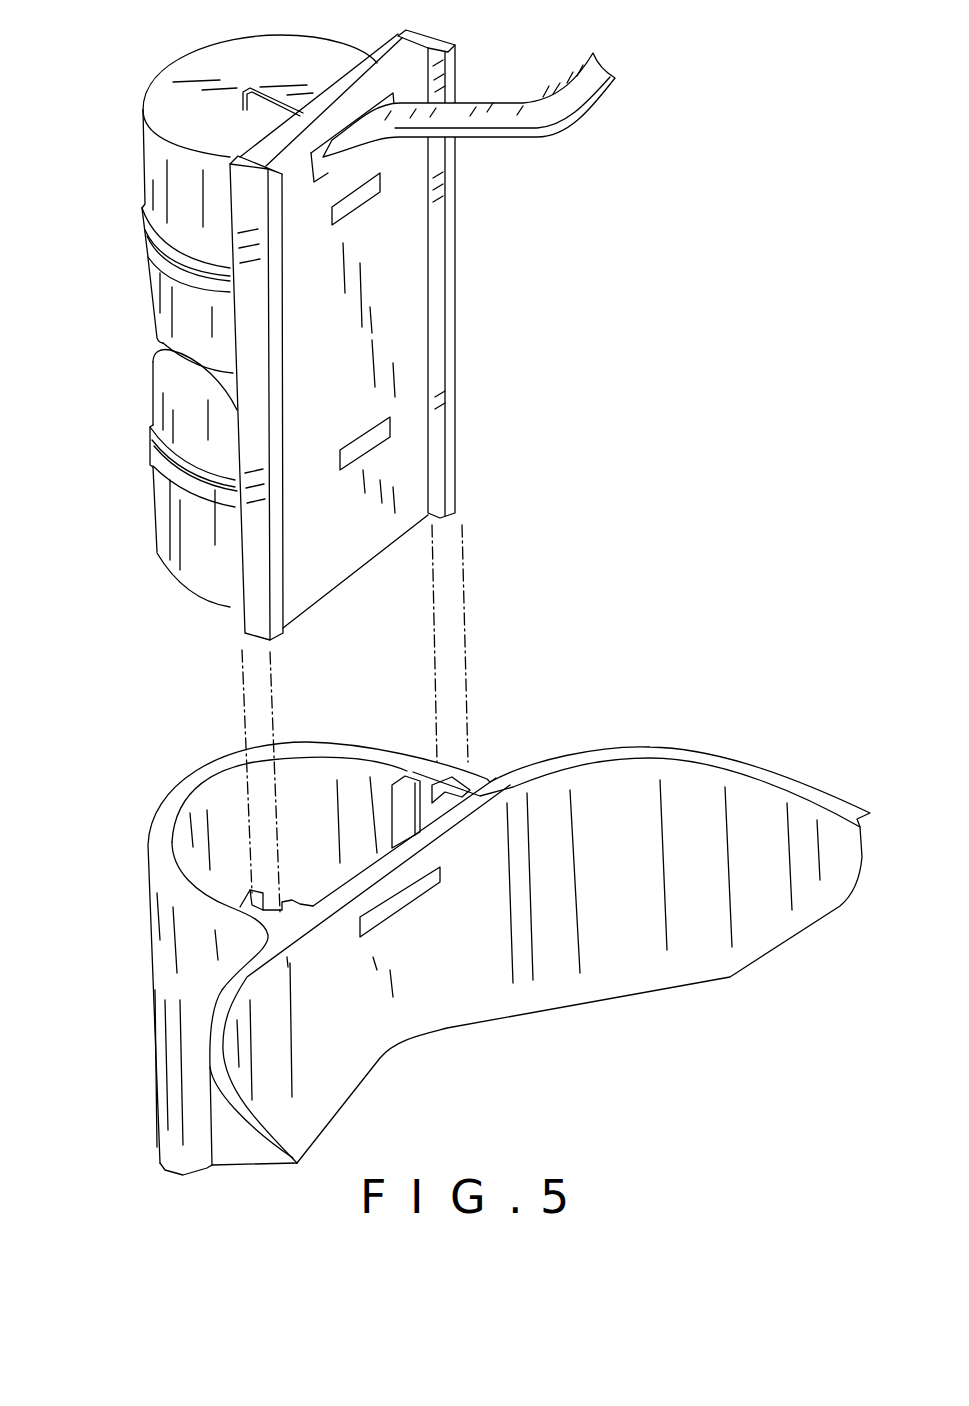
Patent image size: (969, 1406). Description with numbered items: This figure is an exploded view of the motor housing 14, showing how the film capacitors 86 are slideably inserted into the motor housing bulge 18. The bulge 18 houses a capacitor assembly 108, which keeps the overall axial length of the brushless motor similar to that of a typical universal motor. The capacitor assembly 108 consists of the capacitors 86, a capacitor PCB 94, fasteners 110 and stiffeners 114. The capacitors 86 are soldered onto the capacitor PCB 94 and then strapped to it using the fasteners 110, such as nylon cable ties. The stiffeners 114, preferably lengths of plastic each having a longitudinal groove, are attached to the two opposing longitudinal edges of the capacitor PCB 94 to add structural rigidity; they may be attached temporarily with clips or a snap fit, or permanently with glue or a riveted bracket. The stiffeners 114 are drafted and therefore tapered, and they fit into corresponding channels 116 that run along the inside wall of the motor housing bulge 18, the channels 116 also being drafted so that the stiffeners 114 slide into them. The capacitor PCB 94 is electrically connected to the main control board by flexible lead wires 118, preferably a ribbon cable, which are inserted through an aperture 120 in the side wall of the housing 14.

The motor housing 14 is at (723, 752).
The motor housing bulge 18 is at (204, 923).
The capacitors 86 is at (168, 191).
The capacitor PCB 94 is at (333, 547).
The capacitor assembly 108 is at (369, 28).
The fasteners 110 is at (148, 250).
The stiffeners 114 is at (257, 343).
The channels 116 is at (432, 787).
The lead wires 118 is at (587, 98).
The aperture 120 is at (402, 902).